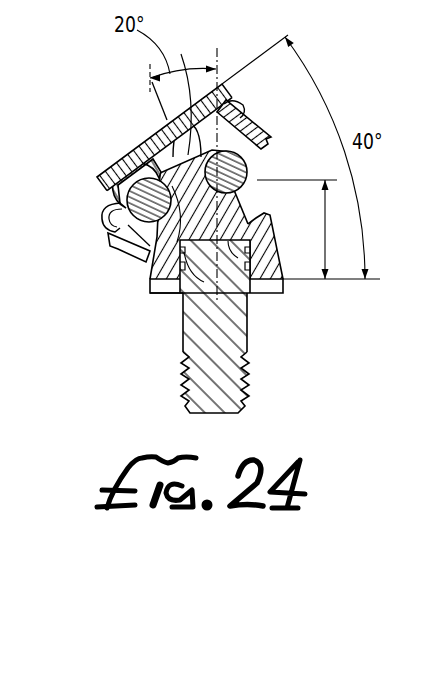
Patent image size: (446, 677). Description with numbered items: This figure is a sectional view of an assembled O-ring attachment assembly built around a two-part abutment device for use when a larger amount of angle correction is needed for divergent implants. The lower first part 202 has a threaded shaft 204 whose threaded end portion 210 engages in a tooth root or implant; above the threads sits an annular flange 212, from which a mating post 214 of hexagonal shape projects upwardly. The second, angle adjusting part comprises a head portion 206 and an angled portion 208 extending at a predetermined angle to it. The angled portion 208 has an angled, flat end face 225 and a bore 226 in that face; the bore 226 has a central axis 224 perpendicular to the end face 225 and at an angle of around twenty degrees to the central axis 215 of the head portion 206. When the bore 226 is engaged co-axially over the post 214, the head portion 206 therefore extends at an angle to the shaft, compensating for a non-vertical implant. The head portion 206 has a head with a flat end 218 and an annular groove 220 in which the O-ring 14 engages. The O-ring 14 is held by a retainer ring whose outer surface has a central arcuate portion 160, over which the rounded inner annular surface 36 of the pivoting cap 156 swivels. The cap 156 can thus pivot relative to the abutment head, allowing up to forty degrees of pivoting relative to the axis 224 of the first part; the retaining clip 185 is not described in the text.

The O-ring 14 is at (128, 213).
The rounded inner annular surface 36 is at (200, 132).
The pivoting cap 156 is at (122, 157).
The central arcuate portion 160 is at (248, 172).
The clamp arm 185 is at (112, 237).
The first part 202 is at (231, 326).
The threaded shaft 204 is at (236, 330).
The head portion 206 is at (254, 118).
The angled portion 208 is at (155, 267).
The threaded end portion 210 is at (245, 372).
The annular flange 212 is at (172, 292).
The post 214 is at (267, 231).
The central axis 215 is at (157, 103).
The flat end 218 is at (185, 93).
The annular groove 220 is at (140, 259).
The axis of the bore 224 is at (242, 213).
The angled flat end face 225 is at (263, 253).
The bore 226 is at (202, 267).